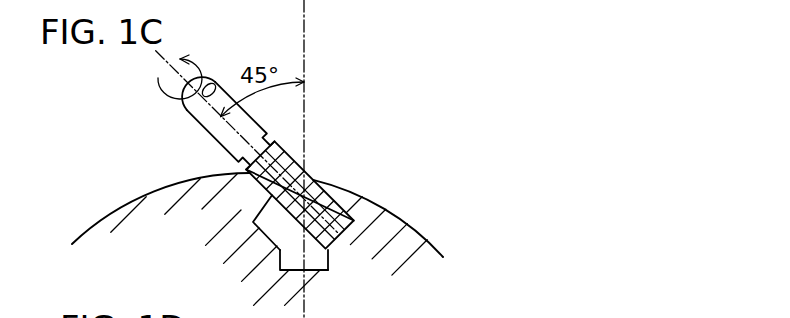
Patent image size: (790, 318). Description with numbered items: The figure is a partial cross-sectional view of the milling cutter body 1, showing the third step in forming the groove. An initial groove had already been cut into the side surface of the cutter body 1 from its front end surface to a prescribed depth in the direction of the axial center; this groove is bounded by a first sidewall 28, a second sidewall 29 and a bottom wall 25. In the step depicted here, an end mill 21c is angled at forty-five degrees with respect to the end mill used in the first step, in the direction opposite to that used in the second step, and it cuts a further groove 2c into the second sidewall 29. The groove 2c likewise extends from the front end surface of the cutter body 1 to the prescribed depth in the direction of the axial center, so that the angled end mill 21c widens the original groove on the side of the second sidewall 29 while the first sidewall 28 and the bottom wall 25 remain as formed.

The cutter body 1 is at (113, 217).
The end mill 21c is at (193, 114).
The groove 2c is at (336, 224).
The first sidewall 28 is at (266, 242).
The bottom wall 25 is at (318, 272).
The second sidewall 29 is at (330, 265).